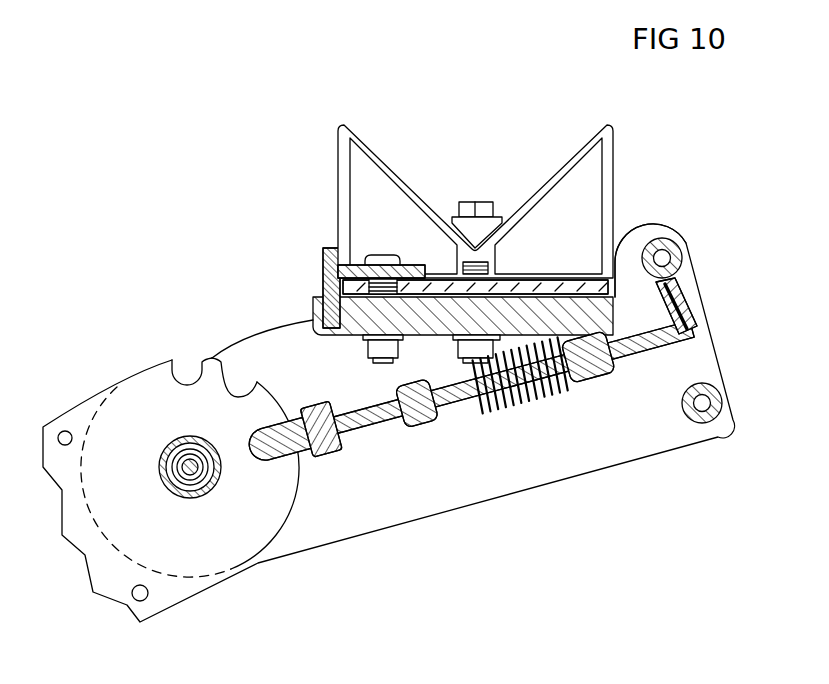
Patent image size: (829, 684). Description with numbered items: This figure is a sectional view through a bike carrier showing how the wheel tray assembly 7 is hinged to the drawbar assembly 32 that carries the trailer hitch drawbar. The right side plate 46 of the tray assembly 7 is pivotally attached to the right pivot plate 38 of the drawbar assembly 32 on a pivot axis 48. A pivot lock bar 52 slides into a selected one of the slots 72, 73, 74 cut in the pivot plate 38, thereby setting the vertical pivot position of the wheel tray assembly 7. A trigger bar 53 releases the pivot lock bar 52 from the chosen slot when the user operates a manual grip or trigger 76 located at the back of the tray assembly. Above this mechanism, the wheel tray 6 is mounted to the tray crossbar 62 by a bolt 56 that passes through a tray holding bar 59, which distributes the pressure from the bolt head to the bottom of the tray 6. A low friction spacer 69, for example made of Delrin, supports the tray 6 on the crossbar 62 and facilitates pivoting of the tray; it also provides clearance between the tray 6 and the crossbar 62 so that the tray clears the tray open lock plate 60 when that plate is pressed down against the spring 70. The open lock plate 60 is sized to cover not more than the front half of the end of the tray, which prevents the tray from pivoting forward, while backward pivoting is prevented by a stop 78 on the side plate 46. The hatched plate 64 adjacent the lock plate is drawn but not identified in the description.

The wheel tray 6 is at (404, 182).
The wheel tray assembly 7 is at (389, 444).
The drawbar assembly 32 is at (389, 444).
The right pivot plate 38 is at (175, 542).
The right side plate 46 is at (458, 482).
The pivot axis 48 is at (180, 463).
The pivot lock bar 52 is at (260, 457).
The trigger bar 53 is at (371, 421).
The bolt 56 is at (471, 201).
The tray holding bar 59 is at (488, 228).
The tray open lock plate 60 is at (358, 266).
The tray crossbar 62 is at (422, 322).
The stop plate 64 is at (323, 258).
The low friction spacer 69 is at (535, 280).
The spring 70 is at (403, 286).
The slot 72 is at (300, 423).
The slot 73 is at (237, 382).
The slot 74 is at (189, 367).
The trigger 76 is at (684, 297).
The stop 78 is at (607, 268).